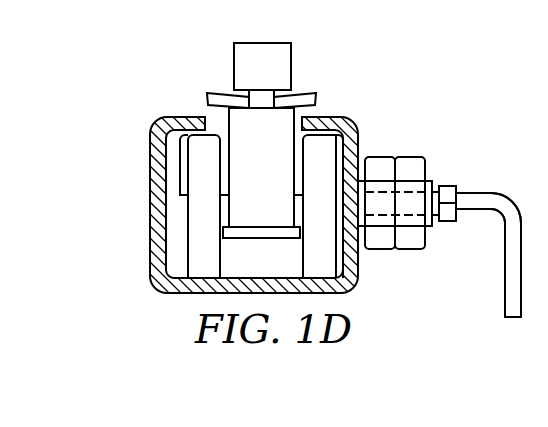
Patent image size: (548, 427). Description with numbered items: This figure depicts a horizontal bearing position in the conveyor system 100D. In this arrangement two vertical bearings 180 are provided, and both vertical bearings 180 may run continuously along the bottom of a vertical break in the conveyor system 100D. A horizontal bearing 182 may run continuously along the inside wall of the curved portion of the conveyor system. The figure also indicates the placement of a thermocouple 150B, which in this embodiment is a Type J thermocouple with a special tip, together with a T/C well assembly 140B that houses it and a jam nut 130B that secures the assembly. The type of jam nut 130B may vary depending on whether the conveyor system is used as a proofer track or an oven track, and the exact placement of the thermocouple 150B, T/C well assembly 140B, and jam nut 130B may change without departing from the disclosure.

The conveyor system 100D is at (337, 62).
The T/C well assembly 140B is at (353, 125).
The jam nut 130B is at (382, 158).
The vertical bearing 180 is at (200, 212).
The horizontal bearing 182 is at (225, 163).
The thermocouple (T/C) 150B is at (505, 258).